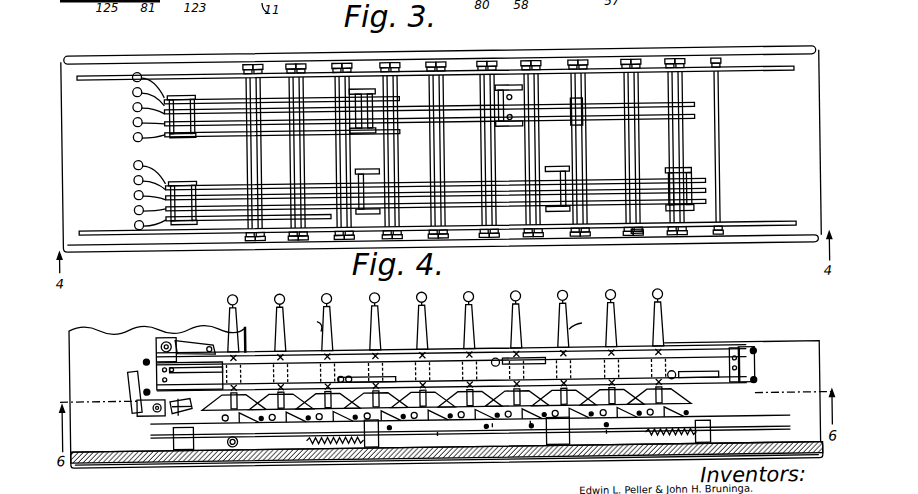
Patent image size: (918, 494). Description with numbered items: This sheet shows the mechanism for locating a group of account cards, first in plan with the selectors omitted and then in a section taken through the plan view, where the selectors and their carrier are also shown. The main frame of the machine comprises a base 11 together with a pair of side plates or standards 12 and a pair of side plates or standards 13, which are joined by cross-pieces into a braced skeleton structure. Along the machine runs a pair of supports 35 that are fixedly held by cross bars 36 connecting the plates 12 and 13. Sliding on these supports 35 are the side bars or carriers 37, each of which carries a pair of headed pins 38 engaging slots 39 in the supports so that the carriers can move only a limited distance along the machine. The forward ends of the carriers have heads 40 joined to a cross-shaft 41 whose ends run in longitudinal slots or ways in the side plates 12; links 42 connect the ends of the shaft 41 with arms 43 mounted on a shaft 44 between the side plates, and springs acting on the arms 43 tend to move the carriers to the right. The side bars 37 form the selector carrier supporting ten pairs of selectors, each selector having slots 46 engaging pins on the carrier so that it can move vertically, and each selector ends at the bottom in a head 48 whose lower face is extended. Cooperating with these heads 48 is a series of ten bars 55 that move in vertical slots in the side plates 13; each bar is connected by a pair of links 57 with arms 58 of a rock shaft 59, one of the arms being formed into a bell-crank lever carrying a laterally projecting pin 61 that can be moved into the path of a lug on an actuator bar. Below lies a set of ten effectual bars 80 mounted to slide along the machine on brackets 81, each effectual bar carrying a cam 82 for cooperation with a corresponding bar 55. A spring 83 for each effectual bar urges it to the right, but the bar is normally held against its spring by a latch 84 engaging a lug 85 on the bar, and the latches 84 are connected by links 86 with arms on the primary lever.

In FIG. 3, the base 11 is at (540, 51).
In FIG. 4, the base 11 is at (235, 458).
In FIG. 3, the side plates or standards 12 is at (120, 58).
In FIG. 4, the side plates or standards 12 is at (100, 326).
In FIG. 3, the side plates or standards 13 is at (745, 51).
In FIG. 4, the side plates or standards 13 is at (765, 346).
In FIG. 4, the supports 35 is at (702, 349).
In FIG. 4, the cross bars 36 is at (144, 358).
In FIG. 4, the side bars or carriers 37 is at (392, 352).
In FIG. 4, the headed pins 38 is at (496, 358).
In FIG. 4, the slots 39 is at (532, 359).
In FIG. 4, the heads 40 is at (157, 344).
In FIG. 4, the cross-shaft 41 is at (167, 338).
In FIG. 4, the links 42 is at (190, 338).
In FIG. 4, the arms 43 is at (240, 340).
In FIG. 4, the shaft 44 is at (238, 441).
In FIG. 4, the slots 46 is at (560, 383).
In FIG. 4, the head 48 is at (430, 381).
In FIG. 3, the bars 55 is at (292, 154).
In FIG. 4, the bars 55 is at (494, 425).
In FIG. 3, the links 57 is at (584, 110).
In FIG. 3, the arms 58 is at (525, 108).
In FIG. 3, the rock shaft 59 is at (438, 158).
In FIG. 4, the rock shaft 59 is at (437, 436).
In FIG. 3, the laterally projecting pin 61 is at (636, 236).
In FIG. 3, the effectual bars 80 is at (244, 116).
In FIG. 4, the effectual bars 80 is at (606, 434).
In FIG. 3, the brackets 81 is at (186, 92).
In FIG. 4, the brackets 81 is at (194, 441).
In FIG. 3, the cam 82 is at (392, 108).
In FIG. 4, the cam 82 is at (530, 424).
In FIG. 4, the spring 83 is at (336, 442).
In FIG. 4, the latch 84 is at (163, 413).
In FIG. 4, the lug 85 is at (190, 404).
In FIG. 4, the links 86 is at (128, 378).